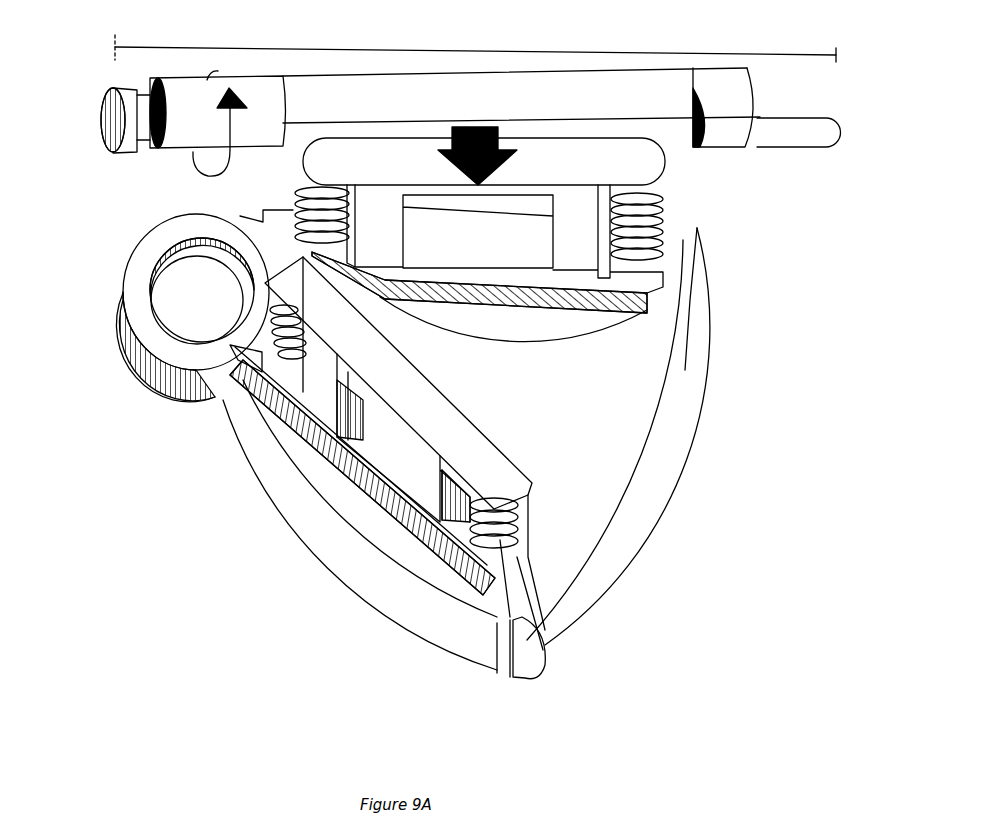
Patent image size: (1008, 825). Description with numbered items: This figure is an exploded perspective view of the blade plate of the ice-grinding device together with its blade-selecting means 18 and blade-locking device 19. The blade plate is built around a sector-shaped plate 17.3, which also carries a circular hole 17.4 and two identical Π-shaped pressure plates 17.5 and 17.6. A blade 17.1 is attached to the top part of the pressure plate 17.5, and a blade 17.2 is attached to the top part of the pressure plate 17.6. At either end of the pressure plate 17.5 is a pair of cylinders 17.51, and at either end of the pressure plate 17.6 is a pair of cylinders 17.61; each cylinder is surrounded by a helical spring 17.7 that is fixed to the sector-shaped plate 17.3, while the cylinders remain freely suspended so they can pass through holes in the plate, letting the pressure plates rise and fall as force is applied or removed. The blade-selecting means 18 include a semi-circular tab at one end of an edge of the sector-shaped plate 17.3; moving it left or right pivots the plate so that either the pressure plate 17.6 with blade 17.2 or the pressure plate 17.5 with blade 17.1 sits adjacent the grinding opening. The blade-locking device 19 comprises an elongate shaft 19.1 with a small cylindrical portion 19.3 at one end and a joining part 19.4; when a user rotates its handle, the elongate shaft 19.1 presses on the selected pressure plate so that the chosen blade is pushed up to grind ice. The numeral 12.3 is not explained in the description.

The blade-locking device 19 is at (867, 47).
The elongate shaft 19.1 is at (727, 82).
The small cylindrical portion 19.3 is at (97, 107).
The joining part 19.4 is at (145, 133).
The blade 17.1 is at (545, 305).
The blade 17.2 is at (410, 535).
The sector-shaped plate 17.3 is at (655, 400).
The circular hole 17.4 is at (180, 283).
The pressure plate 17.5 is at (663, 170).
The cylinders 17.51 is at (292, 205).
The pressure plate 17.6 is at (500, 483).
The cylinders 17.61 is at (283, 340).
The helical spring 17.7 is at (690, 283).
The blade-selecting means 18 is at (548, 668).
The element 12.3 is at (693, 816).